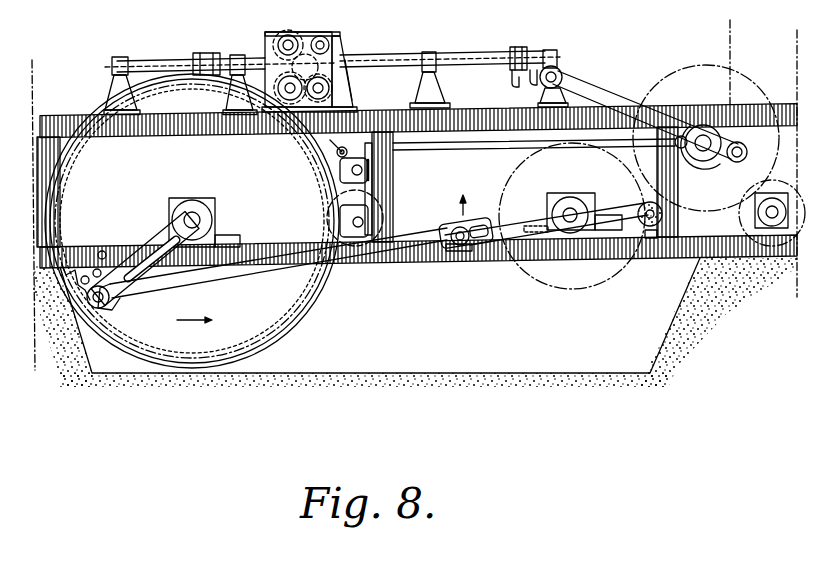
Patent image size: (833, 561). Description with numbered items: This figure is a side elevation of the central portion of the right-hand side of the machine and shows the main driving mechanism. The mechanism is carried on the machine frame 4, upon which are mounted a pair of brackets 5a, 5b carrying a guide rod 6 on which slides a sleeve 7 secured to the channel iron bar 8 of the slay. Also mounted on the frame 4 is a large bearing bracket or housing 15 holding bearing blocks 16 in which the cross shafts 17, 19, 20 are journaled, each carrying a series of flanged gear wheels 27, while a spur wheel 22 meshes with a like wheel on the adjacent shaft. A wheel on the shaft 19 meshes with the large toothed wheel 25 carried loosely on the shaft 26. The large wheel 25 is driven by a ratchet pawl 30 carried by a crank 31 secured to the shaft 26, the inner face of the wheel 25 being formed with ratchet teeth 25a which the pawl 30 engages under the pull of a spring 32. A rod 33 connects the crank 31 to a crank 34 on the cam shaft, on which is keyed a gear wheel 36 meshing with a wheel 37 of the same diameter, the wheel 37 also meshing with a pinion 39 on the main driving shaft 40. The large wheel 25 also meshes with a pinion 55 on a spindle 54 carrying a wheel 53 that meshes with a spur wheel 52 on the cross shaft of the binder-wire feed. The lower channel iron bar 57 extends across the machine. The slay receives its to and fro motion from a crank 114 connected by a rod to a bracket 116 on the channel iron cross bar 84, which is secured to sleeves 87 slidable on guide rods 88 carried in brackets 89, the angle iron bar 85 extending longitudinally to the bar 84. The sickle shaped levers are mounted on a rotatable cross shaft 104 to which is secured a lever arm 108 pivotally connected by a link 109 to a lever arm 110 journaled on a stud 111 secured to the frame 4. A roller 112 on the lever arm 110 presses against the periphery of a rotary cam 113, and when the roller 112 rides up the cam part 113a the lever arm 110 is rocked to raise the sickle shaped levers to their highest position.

The machine frame 4 is at (80, 115).
The bracket 5a is at (239, 54).
The bracket 5b is at (121, 55).
The guide rod 6 is at (220, 47).
The sleeve 7 is at (206, 47).
The channel iron bar 8 is at (196, 86).
The bearing bracket or housing 15 is at (336, 90).
The bearing block 16 is at (344, 62).
The shaft 17 is at (340, 34).
The shaft 19 is at (270, 72).
The shaft 20 is at (330, 92).
The spur wheel 22 is at (288, 32).
The large toothed wheel 25 is at (333, 218).
The ratchet teeth 25a is at (68, 185).
The shaft 26 is at (196, 219).
The flanged gear wheel 27 is at (315, 32).
The ratchet pawl 30 is at (80, 262).
The crank 31 is at (145, 252).
The spring 32 is at (100, 252).
The rod 33 is at (245, 272).
The crank 34 is at (440, 276).
The gear wheel 36 is at (572, 216).
The wheel 37 is at (760, 85).
The pinion 39 is at (781, 201).
The main driving shaft 40 is at (755, 209).
The spur wheel 52 is at (338, 170).
The wheel 53 is at (372, 222).
The spindle 54 is at (396, 198).
The pinion 55 is at (345, 206).
The channel iron bar 57 is at (372, 170).
The channel iron cross bar 84 is at (510, 78).
The angle iron bar 85 is at (450, 48).
The sleeve 87 is at (517, 46).
The guide rod 88 is at (563, 61).
The bracket 89 is at (489, 65).
The rotatable cross shaft 104 is at (332, 135).
The lever arm 108 is at (338, 153).
The link 109 is at (530, 150).
The lever arm 110 is at (680, 186).
The stud 111 is at (650, 252).
The roller 112 is at (662, 215).
The rotary cam 113 is at (576, 192).
The cam part 113a is at (546, 262).
The crank 114 is at (730, 143).
The bracket 116 is at (540, 86).